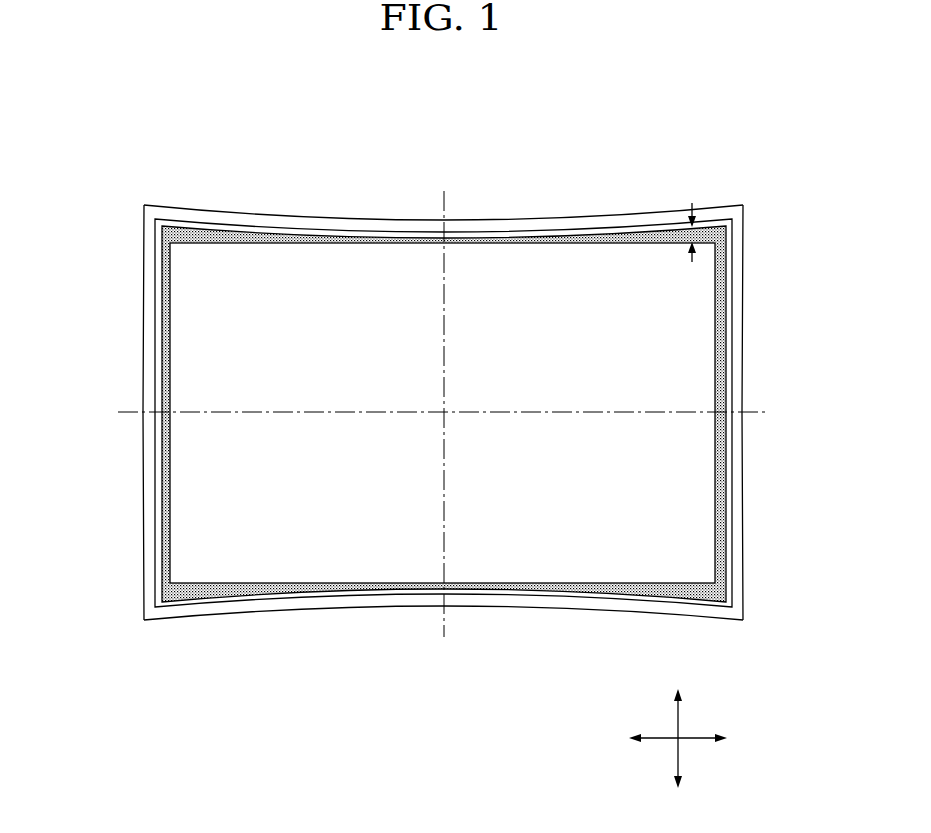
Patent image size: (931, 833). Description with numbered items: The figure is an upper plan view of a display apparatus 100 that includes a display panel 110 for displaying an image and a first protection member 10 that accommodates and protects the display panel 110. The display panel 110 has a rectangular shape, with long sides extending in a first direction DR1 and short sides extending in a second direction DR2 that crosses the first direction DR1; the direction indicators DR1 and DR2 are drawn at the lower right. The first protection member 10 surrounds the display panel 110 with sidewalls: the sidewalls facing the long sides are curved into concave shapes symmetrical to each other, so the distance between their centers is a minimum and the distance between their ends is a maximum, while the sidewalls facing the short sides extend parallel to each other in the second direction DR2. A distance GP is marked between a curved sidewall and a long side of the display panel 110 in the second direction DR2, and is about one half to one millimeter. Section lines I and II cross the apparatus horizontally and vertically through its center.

The display apparatus 100 is at (638, 140).
The first protection member 10 is at (750, 297).
The display panel 110 is at (562, 262).
The distance GP is at (690, 228).
The section line I-I' I is at (116, 416).
The section line II-II' II is at (450, 192).
The first direction DR1 is at (696, 738).
The second direction DR2 is at (678, 728).